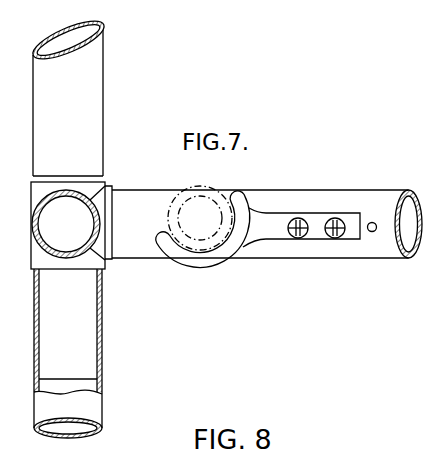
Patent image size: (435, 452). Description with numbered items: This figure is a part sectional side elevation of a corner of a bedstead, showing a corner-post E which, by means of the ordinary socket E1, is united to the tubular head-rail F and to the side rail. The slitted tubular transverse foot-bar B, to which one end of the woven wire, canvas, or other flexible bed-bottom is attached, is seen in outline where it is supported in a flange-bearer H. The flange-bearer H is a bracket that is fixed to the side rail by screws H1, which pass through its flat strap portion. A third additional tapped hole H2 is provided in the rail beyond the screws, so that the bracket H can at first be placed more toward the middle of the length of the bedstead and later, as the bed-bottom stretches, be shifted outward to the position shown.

The corner-post E is at (68, 226).
The socket E1 is at (59, 224).
The tubular head-rail F is at (66, 224).
The slitted tubular transverse foot-bar B is at (200, 218).
The flange-bearer H is at (258, 242).
The screws H1 is at (345, 204).
The third additional tapped hole H2 is at (383, 211).